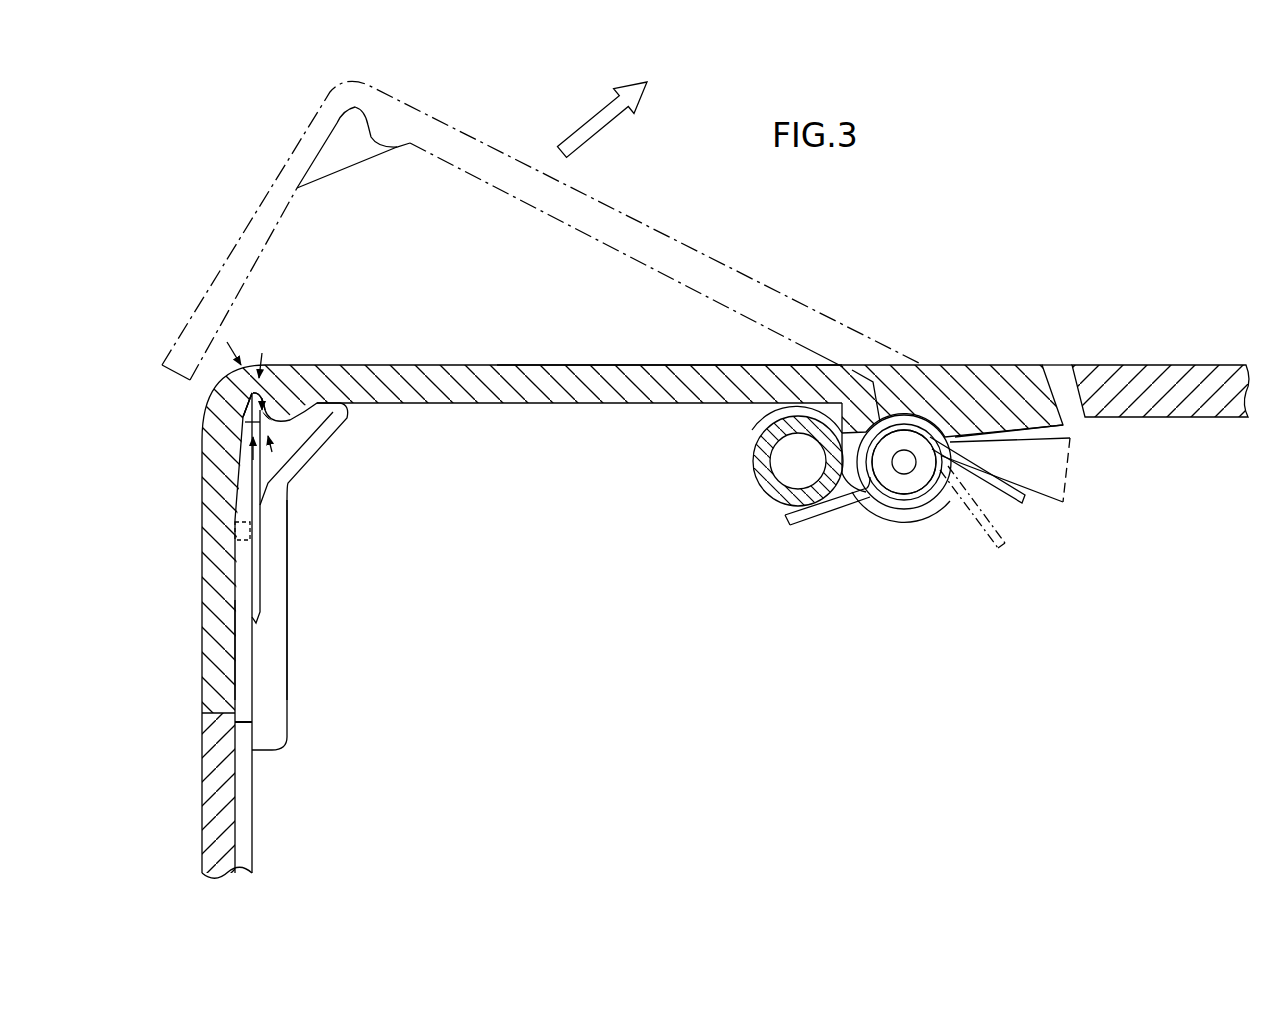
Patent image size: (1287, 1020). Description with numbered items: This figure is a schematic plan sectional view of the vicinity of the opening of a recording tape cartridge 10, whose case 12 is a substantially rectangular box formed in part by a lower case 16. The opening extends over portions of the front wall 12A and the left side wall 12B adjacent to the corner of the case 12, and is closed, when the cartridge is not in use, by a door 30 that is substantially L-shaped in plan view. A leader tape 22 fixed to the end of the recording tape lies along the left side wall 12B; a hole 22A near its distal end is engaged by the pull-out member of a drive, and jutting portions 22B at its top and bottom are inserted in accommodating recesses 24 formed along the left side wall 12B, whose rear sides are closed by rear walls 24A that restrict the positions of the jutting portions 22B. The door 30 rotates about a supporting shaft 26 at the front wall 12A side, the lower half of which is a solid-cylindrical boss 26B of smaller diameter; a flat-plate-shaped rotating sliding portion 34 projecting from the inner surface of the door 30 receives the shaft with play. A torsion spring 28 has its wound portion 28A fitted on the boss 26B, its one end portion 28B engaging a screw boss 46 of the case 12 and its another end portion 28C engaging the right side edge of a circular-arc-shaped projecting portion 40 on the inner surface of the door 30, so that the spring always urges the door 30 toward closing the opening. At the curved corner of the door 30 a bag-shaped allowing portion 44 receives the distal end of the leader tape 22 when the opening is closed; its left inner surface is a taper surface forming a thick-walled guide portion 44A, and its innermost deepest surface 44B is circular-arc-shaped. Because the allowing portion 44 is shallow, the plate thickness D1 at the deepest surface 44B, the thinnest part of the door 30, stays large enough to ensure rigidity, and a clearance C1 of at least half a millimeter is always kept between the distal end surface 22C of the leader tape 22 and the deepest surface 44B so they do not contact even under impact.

The recording tape cartridge 10 is at (1010, 243).
The case 12 is at (704, 586).
The front wall 12A is at (1103, 365).
The left side wall 12B is at (202, 805).
The lower case 16 is at (1183, 363).
The door 30 is at (498, 361).
The leader tape 22 is at (255, 633).
The hole 22A is at (235, 533).
The jutting portions 22B is at (243, 685).
The distal end surface 22C is at (260, 427).
The accommodating recesses 24 is at (302, 597).
The rear walls 24A is at (262, 750).
The allowing portion 44 is at (327, 565).
The guide portion 44A is at (270, 503).
The deepest surface 44B is at (262, 410).
The projecting portions 40 is at (822, 410).
The screw boss 46 is at (783, 490).
The torsion spring 28 is at (904, 500).
The wound portion 28A is at (872, 505).
The one end portion 28B is at (790, 527).
The another end portion 28C is at (1015, 503).
The rotating sliding portion 34 is at (947, 510).
The supporting shaft 26 is at (1006, 470).
The boss 26B is at (916, 526).
The plate thickness D1 is at (250, 390).
The clearance C1 is at (250, 407).